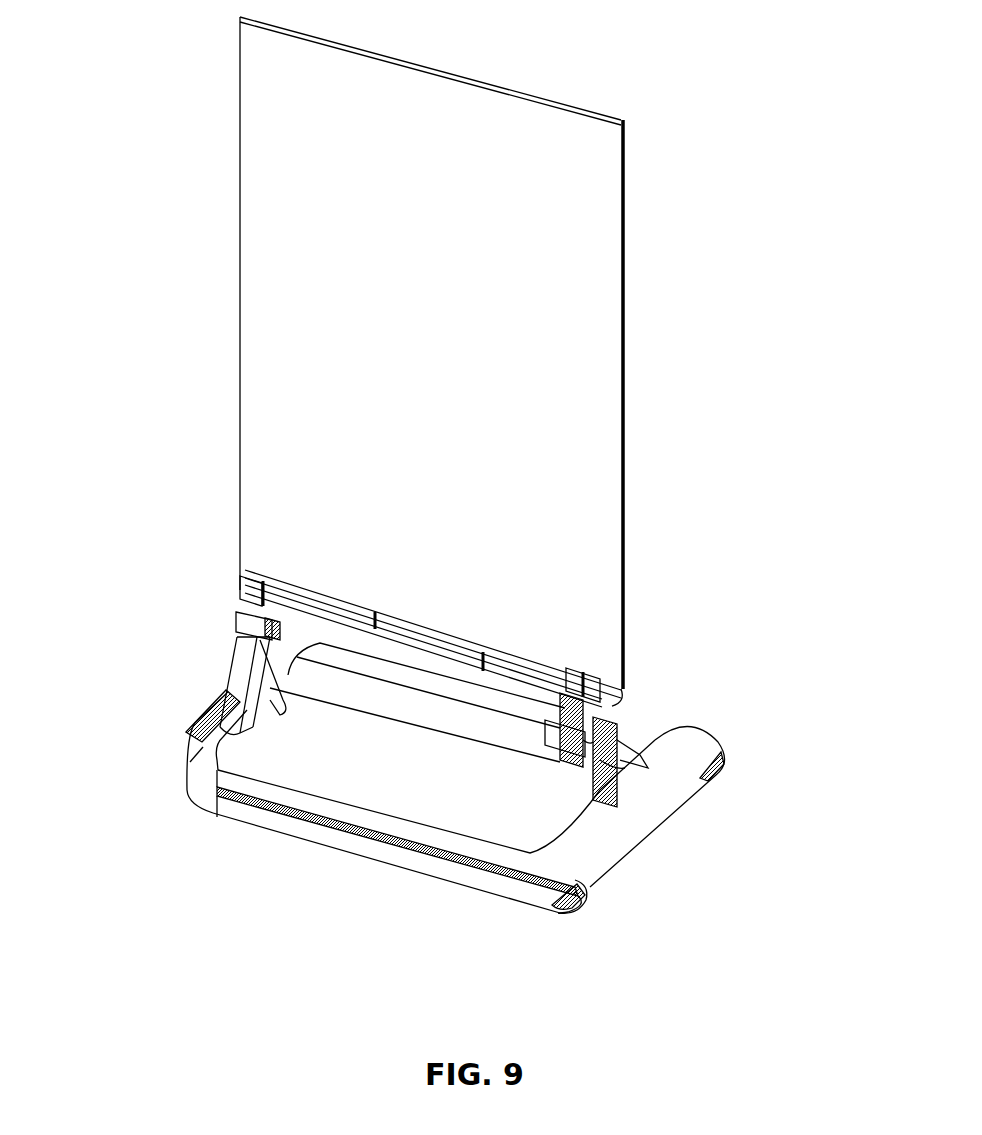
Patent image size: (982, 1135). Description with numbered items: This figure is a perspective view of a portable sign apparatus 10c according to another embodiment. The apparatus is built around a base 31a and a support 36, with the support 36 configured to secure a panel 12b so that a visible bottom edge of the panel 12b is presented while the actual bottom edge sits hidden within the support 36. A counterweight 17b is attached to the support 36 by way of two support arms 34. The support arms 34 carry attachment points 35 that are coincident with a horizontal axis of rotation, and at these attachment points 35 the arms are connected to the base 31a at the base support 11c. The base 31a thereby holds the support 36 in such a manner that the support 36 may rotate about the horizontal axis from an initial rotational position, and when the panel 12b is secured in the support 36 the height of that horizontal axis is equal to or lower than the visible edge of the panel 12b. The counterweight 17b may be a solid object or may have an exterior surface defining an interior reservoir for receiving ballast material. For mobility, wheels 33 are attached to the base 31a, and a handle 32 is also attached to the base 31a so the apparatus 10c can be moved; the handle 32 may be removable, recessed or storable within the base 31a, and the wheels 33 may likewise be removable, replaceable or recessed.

The portable sign apparatus 10c is at (214, 245).
The panel 12b is at (567, 486).
The support 36 is at (628, 677).
The support arms 34 is at (238, 622).
The base support 11c is at (232, 663).
The handle 32 is at (195, 712).
The attachment points 35 is at (565, 733).
The counterweight 17b is at (427, 703).
The base 31a is at (290, 822).
The wheels 33 is at (722, 770).